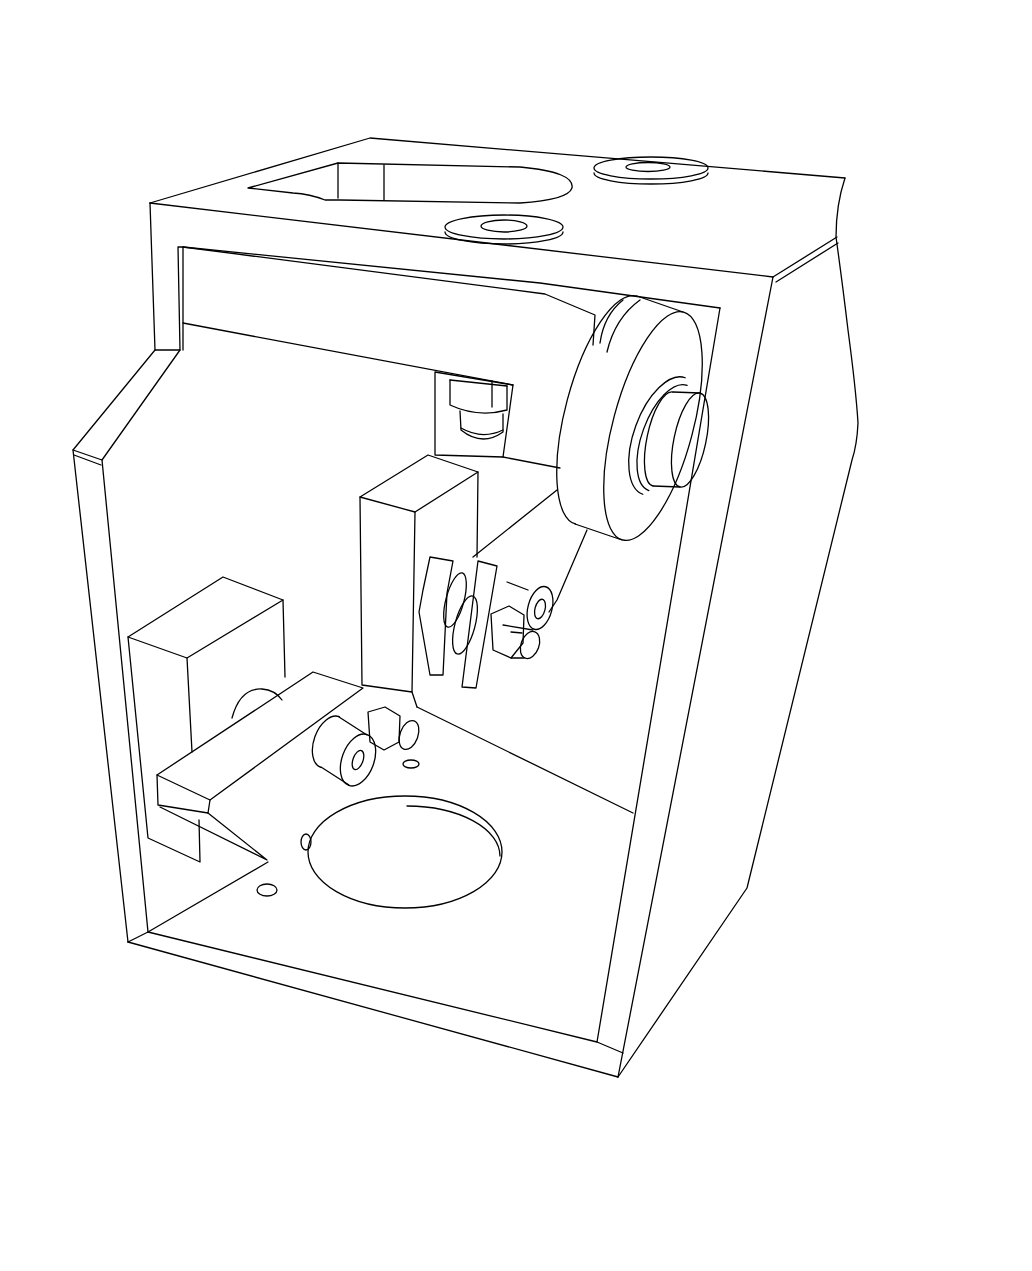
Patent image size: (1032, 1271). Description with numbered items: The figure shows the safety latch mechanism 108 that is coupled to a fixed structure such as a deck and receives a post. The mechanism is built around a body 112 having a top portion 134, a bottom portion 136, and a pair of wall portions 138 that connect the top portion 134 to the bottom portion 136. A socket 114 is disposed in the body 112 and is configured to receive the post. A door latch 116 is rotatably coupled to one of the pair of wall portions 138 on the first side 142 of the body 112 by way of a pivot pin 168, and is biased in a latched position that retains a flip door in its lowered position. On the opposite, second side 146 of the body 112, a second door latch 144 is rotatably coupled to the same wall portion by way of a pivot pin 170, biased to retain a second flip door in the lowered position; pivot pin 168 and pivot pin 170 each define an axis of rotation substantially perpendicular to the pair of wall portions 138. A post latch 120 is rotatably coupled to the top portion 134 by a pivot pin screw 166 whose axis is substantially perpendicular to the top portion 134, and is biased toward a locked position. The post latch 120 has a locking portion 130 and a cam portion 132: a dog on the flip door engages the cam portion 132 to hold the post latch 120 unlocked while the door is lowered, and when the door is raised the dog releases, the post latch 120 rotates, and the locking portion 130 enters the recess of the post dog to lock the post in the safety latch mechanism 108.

The safety latch mechanism 108 is at (862, 90).
The body 112 is at (162, 242).
The socket 114 is at (503, 185).
The door latch 116 is at (230, 810).
The post latch 120 is at (346, 330).
The locking portion 130 is at (215, 297).
The cam portion 132 is at (607, 353).
The top portion 134 is at (215, 195).
The bottom portion 136 is at (483, 973).
The pair of wall portions 138 is at (820, 524).
The first side 142 is at (143, 590).
The second door latch 144 is at (550, 561).
The second side 146 is at (400, 440).
The pivot pin screw 166 is at (505, 440).
The pivot pin 168 is at (403, 752).
The pivot pin 170 is at (550, 620).